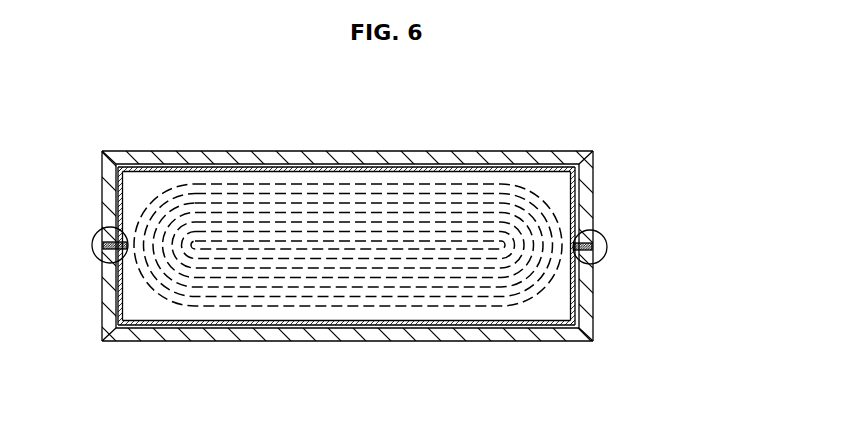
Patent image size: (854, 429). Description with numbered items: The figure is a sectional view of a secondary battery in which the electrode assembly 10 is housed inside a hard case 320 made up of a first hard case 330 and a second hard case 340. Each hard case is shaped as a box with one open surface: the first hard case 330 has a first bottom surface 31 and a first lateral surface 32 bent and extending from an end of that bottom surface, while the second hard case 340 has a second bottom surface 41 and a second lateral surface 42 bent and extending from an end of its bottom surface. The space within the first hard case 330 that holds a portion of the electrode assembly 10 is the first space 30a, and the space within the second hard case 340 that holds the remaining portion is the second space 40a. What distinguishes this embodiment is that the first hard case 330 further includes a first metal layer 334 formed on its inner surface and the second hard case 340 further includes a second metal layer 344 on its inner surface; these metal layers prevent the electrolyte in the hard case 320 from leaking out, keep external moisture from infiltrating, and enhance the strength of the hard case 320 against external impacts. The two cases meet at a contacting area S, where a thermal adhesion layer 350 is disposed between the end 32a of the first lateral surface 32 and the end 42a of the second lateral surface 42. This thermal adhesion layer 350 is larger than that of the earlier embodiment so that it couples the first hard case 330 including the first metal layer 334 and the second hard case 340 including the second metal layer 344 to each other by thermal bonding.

The electrode assembly 10 is at (296, 183).
The second space 40a is at (150, 183).
The first space 30a is at (148, 305).
The second bottom surface 41 is at (372, 155).
The second lateral surface 42 is at (593, 182).
The end of the second lateral surface 42a is at (104, 243).
The first bottom surface 31 is at (260, 338).
The first lateral surface 32 is at (590, 305).
The end of the first lateral surface 32a is at (104, 252).
The second metal layer 344 is at (477, 168).
The first metal layer 334 is at (347, 328).
The second hard case 340 is at (598, 203).
The first hard case 330 is at (598, 298).
The thermal adhesion layer 350 is at (595, 243).
The hard case 320 is at (433, 247).
The contacting area S is at (93, 252).